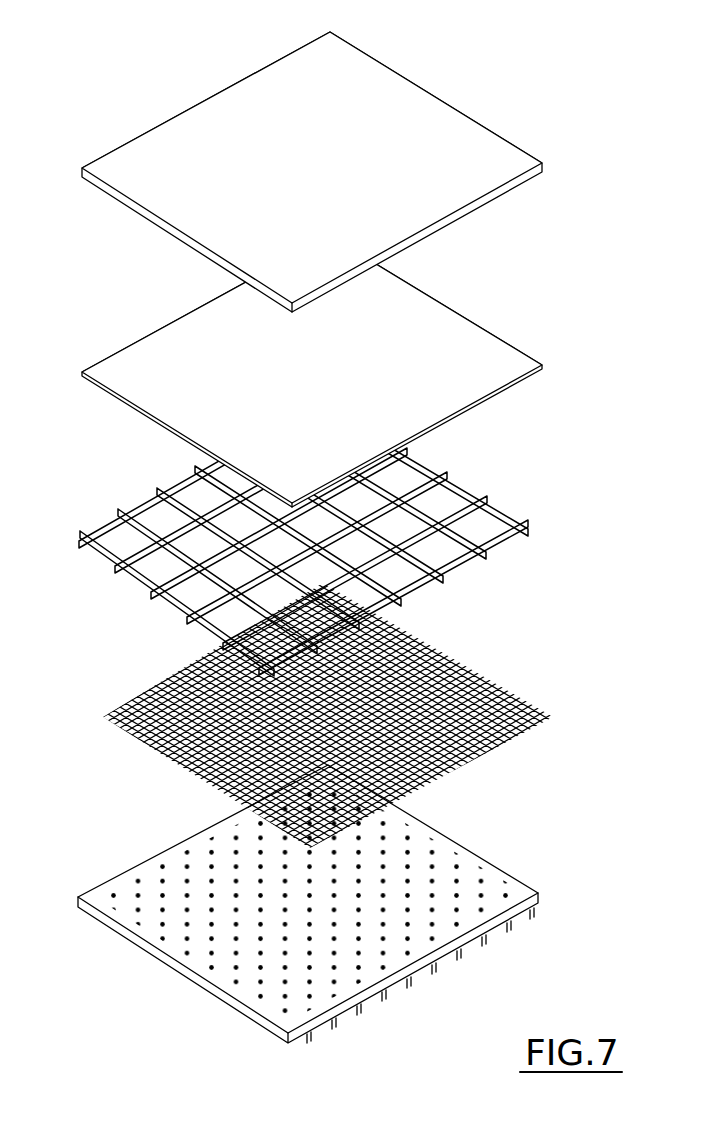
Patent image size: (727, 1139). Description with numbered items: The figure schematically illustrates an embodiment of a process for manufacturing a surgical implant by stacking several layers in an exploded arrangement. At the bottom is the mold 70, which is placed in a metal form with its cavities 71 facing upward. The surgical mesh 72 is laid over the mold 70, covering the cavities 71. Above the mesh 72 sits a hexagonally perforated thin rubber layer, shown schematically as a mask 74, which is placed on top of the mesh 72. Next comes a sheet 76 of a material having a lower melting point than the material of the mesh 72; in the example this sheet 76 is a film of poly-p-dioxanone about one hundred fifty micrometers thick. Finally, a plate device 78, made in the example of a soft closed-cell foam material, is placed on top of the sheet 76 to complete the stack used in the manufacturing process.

The mold 70 is at (165, 965).
The cavities 71 is at (157, 885).
The surgical mesh 72 is at (152, 687).
The mask 74 is at (120, 513).
The sheet 76 is at (148, 360).
The plate device 78 is at (168, 140).